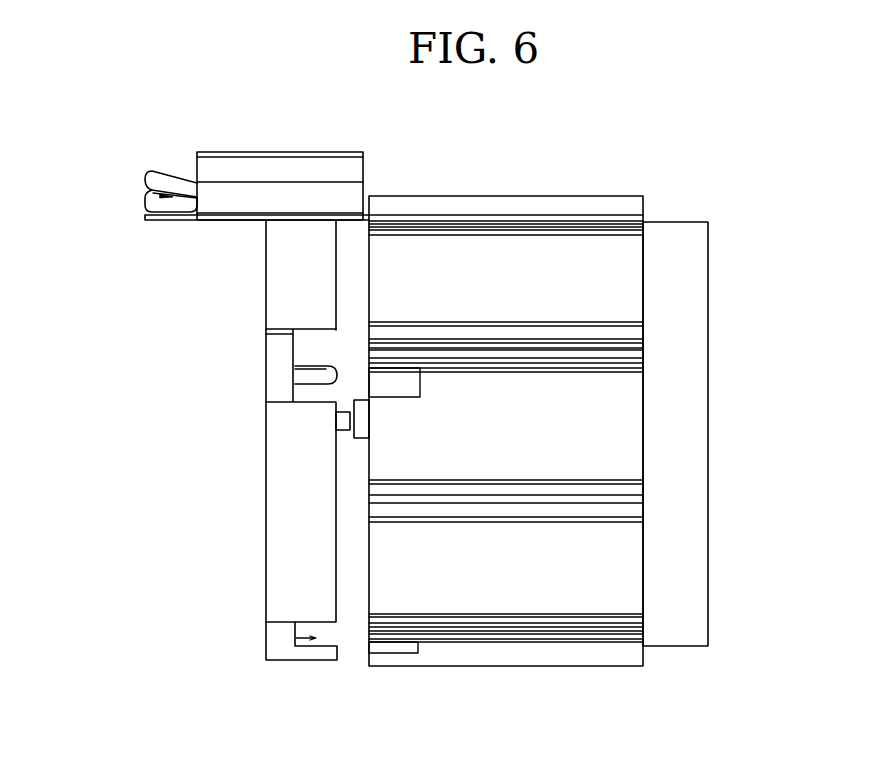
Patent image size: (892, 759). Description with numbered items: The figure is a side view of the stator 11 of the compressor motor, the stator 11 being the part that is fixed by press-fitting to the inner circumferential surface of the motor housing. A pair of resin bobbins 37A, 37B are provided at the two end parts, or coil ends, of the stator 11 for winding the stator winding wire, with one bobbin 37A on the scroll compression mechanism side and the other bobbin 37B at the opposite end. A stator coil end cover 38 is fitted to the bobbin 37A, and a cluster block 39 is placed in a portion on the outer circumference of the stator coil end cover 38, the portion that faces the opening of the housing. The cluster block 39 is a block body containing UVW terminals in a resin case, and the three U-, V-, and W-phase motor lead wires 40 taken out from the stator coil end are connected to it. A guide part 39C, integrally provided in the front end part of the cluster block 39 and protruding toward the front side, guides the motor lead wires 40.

The stator 11 is at (565, 197).
The resin bobbin 37A is at (310, 348).
The resin bobbin 37B is at (693, 277).
The stator coil end cover 38 is at (267, 295).
The cluster block 39 is at (287, 162).
The guide part 39C is at (158, 223).
The motor lead wire 40 is at (147, 174).